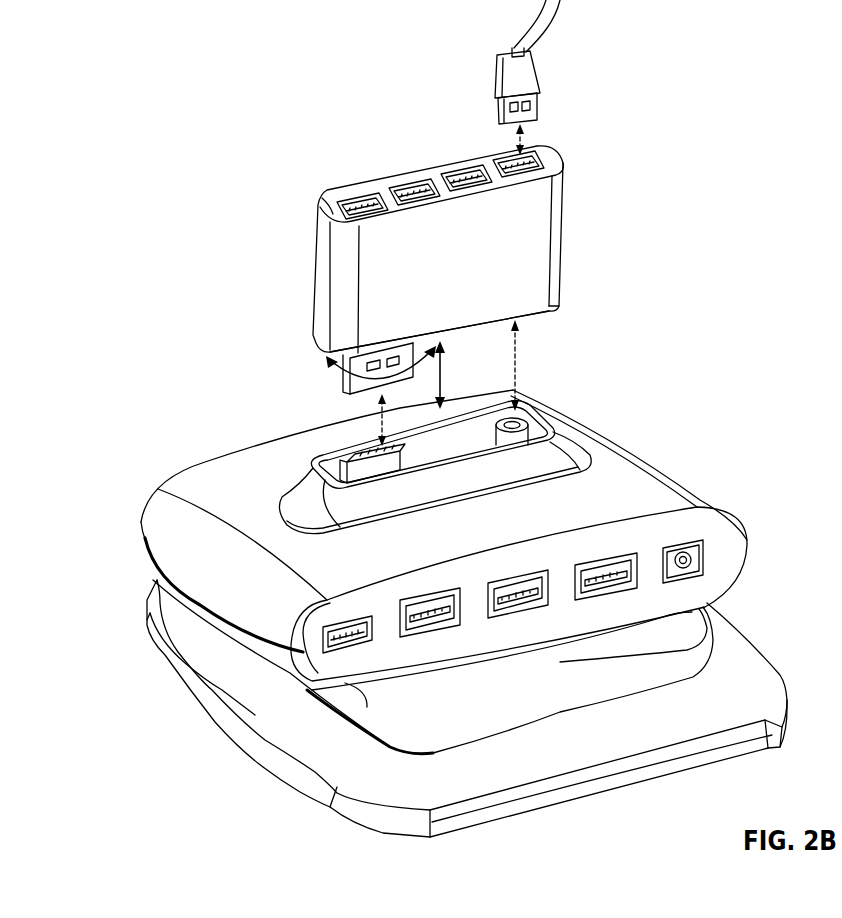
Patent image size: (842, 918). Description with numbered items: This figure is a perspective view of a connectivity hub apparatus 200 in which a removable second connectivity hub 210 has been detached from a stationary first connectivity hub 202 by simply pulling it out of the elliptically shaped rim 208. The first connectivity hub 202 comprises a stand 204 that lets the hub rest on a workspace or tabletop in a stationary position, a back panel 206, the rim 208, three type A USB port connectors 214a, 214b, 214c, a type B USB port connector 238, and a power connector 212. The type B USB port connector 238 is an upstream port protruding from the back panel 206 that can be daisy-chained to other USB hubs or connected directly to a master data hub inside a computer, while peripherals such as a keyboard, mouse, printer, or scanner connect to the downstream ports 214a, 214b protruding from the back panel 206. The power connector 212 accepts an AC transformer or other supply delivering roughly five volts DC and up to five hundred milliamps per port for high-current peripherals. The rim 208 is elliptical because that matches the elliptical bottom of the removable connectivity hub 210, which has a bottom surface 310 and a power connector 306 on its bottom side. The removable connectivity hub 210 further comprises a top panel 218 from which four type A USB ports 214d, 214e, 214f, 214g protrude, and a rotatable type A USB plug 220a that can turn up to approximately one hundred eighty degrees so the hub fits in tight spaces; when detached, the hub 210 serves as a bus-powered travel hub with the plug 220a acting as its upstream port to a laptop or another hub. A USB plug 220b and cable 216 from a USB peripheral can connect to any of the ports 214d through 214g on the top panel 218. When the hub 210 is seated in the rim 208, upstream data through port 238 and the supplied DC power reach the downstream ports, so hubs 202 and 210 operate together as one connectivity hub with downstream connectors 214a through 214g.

The connectivity hub apparatus 200 is at (708, 96).
The first connectivity hub 202 is at (197, 467).
The stand 204 is at (767, 655).
The back panel 206 is at (723, 547).
The elliptically shaped rim 208 is at (577, 450).
The second connectivity hub 210 is at (310, 327).
The power connector 212 is at (703, 555).
The type A USB port connector 214a is at (430, 635).
The type A USB port connector 214b is at (517, 613).
The type A USB port connector 214c is at (603, 595).
The type A USB port 214d is at (360, 197).
The type A USB port 214e is at (407, 183).
The type A USB port 214f is at (457, 172).
The type A USB port 214g is at (497, 157).
The cable 216 is at (543, 40).
The top panel 218 is at (330, 210).
The rotatable USB plug 220a is at (343, 388).
The USB plug 220b is at (540, 100).
The type B USB port connector 238 is at (347, 653).
The power connector 306 is at (550, 310).
The bottom surface 310 is at (457, 333).